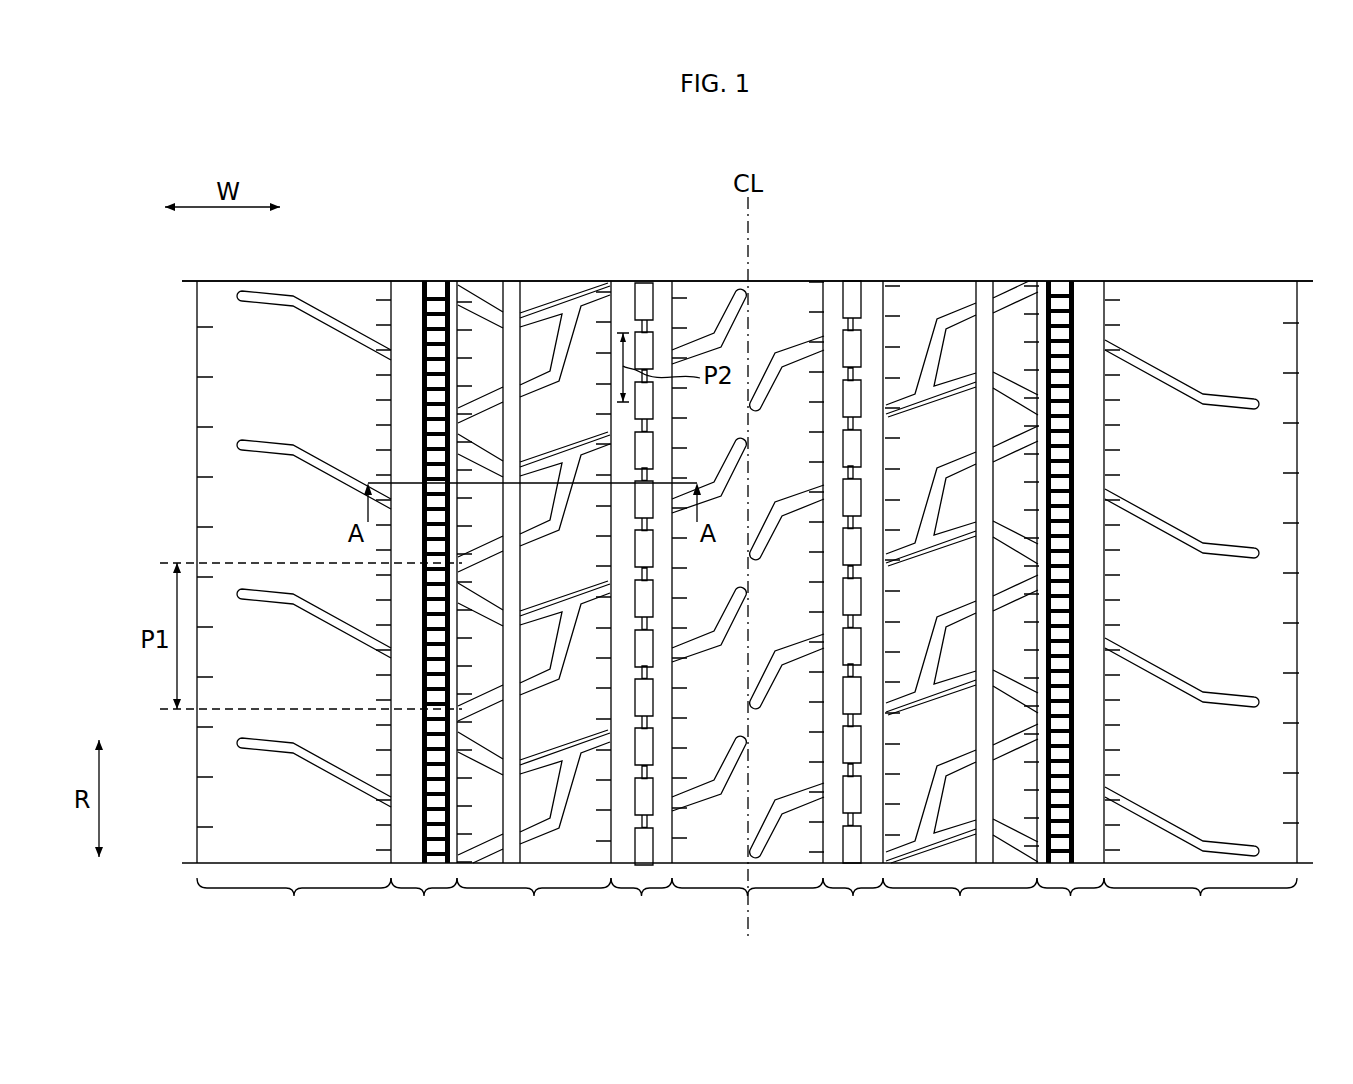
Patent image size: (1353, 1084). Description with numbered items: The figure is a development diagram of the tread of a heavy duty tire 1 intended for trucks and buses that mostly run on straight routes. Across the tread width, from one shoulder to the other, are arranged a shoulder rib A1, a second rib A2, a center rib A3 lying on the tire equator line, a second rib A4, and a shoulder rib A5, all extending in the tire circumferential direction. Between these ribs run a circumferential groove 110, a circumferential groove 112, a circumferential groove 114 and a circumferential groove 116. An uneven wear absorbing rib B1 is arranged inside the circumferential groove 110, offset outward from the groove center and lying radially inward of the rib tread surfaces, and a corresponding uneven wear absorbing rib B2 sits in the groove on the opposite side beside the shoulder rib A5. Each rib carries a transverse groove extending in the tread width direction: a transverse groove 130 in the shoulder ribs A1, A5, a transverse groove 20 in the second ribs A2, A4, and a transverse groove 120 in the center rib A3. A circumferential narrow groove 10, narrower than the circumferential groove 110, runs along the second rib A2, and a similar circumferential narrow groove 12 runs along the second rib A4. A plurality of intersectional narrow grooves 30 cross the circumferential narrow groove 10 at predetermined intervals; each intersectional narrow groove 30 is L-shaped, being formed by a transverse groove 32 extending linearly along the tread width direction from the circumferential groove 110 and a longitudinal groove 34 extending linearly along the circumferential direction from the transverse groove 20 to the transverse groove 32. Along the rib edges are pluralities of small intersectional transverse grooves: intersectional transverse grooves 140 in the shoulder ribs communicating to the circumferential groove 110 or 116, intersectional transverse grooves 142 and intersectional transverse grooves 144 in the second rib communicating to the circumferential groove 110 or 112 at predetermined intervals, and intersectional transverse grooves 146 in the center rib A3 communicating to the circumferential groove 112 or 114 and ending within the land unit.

The heavy duty tire 1 is at (1182, 180).
The circumferential narrow groove 10 is at (512, 292).
The circumferential narrow groove 12 is at (984, 292).
The transverse groove 20 is at (548, 305).
The intersectional narrow groove 30 is at (567, 466).
The transverse groove 32 is at (592, 438).
The longitudinal groove 34 is at (565, 525).
The circumferential groove 110 is at (424, 571).
The circumferential groove 112 is at (641, 604).
The circumferential groove 114 is at (853, 603).
The circumferential groove 116 is at (1070, 571).
The transverse groove 120 is at (737, 296).
The transverse groove 130 is at (320, 316).
The intersectional transverse groove 140 is at (388, 297).
The intersectional transverse groove 142 is at (464, 330).
The intersectional transverse groove 144 is at (605, 292).
The intersectional transverse groove 146 is at (682, 296).
The shoulder rib A1 is at (294, 902).
The second rib A2 is at (534, 902).
The center rib A3 is at (747, 902).
The second rib A4 is at (960, 902).
The shoulder rib A5 is at (1200, 902).
The uneven wear absorbing rib B1 is at (437, 292).
The uneven wear absorbing rib B2 is at (1058, 292).